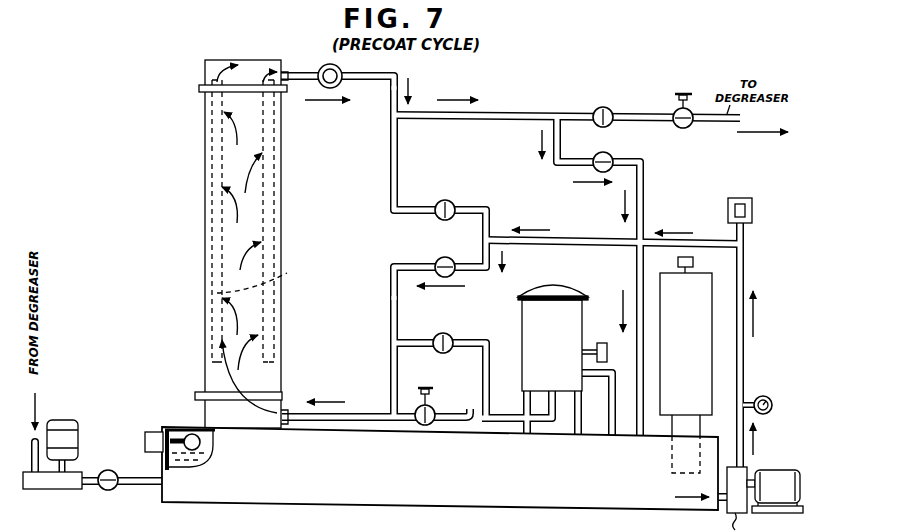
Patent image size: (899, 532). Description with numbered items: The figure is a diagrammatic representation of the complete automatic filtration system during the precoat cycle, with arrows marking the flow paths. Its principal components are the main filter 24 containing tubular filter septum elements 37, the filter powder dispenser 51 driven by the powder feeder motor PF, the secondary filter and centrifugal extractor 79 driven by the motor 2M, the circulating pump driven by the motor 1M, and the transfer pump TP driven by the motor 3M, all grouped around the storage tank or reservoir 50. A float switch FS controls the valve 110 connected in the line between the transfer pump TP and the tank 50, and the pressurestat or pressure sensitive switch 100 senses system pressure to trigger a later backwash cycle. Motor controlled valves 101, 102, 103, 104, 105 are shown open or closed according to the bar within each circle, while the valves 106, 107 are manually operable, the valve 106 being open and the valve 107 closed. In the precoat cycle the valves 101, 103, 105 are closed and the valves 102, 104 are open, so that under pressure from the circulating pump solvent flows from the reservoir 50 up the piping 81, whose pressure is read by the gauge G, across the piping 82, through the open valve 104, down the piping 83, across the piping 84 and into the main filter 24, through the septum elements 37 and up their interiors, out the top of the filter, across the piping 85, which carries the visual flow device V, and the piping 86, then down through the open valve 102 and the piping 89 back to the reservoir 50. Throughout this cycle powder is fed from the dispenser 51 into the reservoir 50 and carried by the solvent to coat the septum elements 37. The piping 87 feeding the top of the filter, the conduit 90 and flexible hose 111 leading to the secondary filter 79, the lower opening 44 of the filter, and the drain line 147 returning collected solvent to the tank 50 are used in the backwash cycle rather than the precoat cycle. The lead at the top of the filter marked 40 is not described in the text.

The main filter 24 is at (285, 220).
The tubular filter septum elements 37 is at (267, 279).
The filter outlet 40 is at (289, 72).
The lower opening 44 is at (288, 412).
The storage tank 50 is at (545, 480).
The filter powder dispenser 51 is at (702, 321).
The secondary filter and centrifugal extractor 79 is at (568, 341).
The piping 81 is at (744, 358).
The piping 82 is at (573, 234).
The piping 83 is at (390, 296).
The piping 84 is at (357, 413).
The piping 85 is at (367, 70).
The piping 86 is at (505, 112).
The piping 87 is at (390, 150).
The piping 89 is at (641, 207).
The conduit 90 is at (486, 340).
The pressurestat 100 is at (744, 197).
The motor controlled valve 101 is at (614, 98).
The motor controlled valve 102 is at (608, 149).
The motor controlled valve 103 is at (447, 196).
The motor controlled valve 104 is at (450, 253).
The motor controlled valve 105 is at (443, 333).
The manually operable valve 106 is at (688, 88).
The manually operable valve 107 is at (430, 382).
The valve 110 is at (109, 469).
The flexible hose 111 is at (503, 422).
The drain line 147 is at (608, 416).
The visual flow device V is at (330, 64).
The gauge G is at (769, 396).
The powder feeder motor PF is at (678, 263).
The motor 1M is at (776, 475).
The motor 2M is at (599, 343).
The motor 3M is at (63, 420).
The transfer pump TP is at (62, 490).
The float switch FS is at (152, 432).